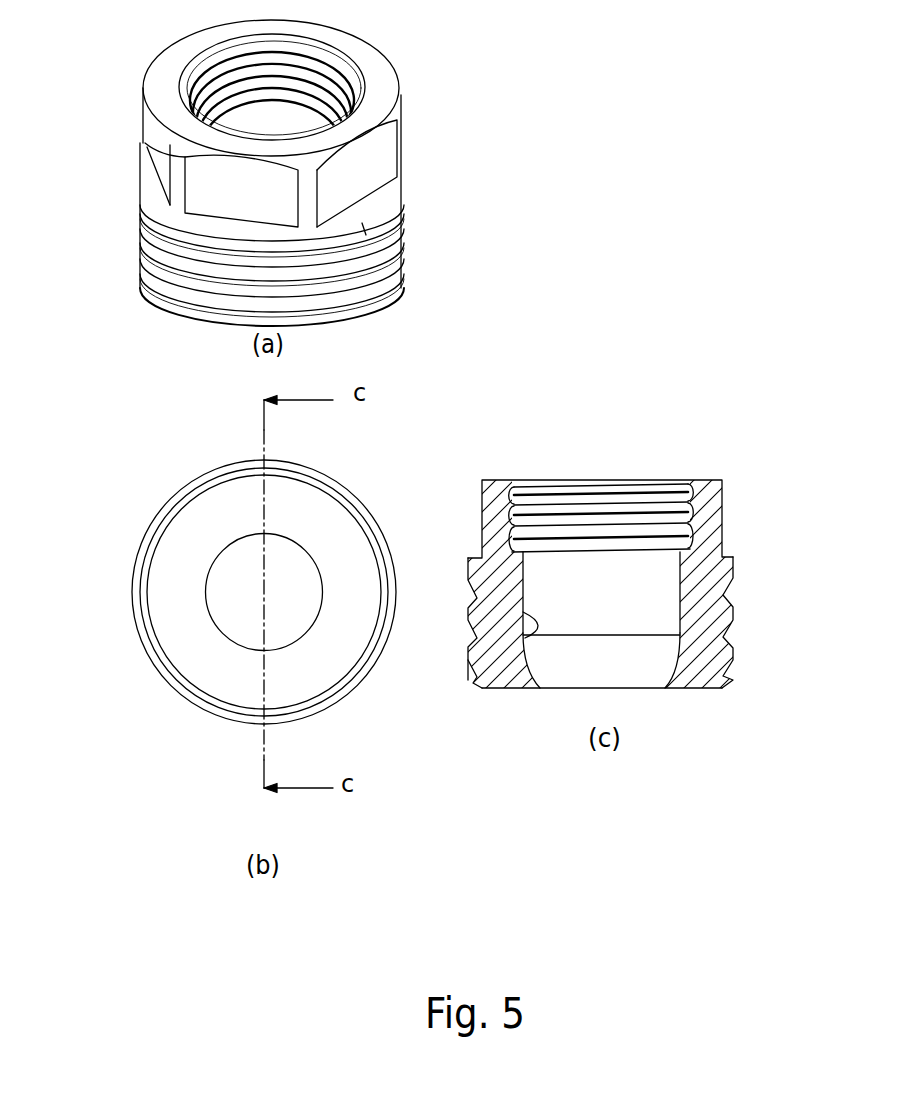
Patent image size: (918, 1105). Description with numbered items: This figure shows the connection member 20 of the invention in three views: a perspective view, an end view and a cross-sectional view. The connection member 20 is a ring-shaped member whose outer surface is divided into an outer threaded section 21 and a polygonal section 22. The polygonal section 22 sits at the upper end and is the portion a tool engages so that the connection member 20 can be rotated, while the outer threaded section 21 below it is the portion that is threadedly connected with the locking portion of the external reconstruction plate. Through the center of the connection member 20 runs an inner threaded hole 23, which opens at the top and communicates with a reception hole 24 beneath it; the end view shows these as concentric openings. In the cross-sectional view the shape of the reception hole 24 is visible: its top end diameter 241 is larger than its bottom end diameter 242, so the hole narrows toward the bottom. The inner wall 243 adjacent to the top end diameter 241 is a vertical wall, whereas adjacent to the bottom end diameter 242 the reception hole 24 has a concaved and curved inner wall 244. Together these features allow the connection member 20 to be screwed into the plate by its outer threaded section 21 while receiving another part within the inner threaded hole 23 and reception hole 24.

The connection member 20 is at (407, 72).
The outer threaded section 21 is at (363, 280).
The polygonal section 22 is at (362, 152).
The inner threaded hole 23 is at (220, 80).
The reception hole 24 is at (623, 590).
The top end diameter 241 is at (580, 548).
The bottom end diameter 242 is at (567, 688).
The inner wall 243 is at (480, 668).
The concaved and curved inner wall 244 is at (653, 672).